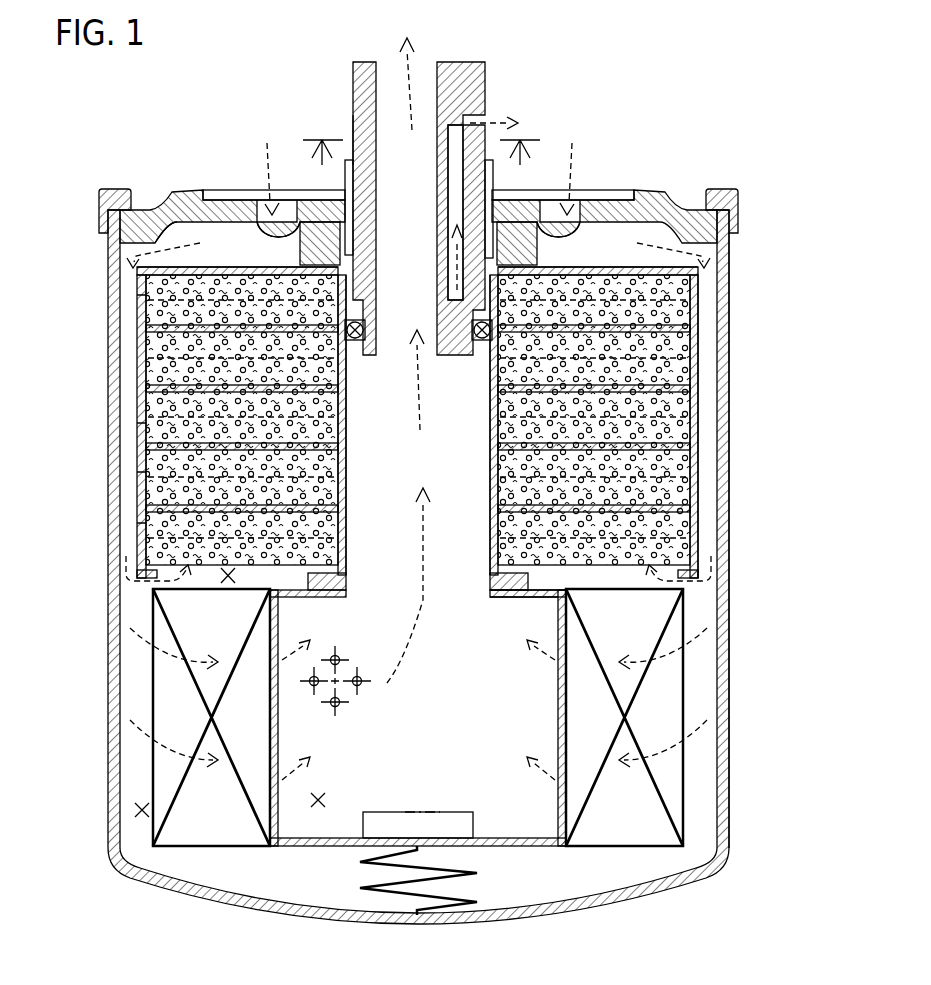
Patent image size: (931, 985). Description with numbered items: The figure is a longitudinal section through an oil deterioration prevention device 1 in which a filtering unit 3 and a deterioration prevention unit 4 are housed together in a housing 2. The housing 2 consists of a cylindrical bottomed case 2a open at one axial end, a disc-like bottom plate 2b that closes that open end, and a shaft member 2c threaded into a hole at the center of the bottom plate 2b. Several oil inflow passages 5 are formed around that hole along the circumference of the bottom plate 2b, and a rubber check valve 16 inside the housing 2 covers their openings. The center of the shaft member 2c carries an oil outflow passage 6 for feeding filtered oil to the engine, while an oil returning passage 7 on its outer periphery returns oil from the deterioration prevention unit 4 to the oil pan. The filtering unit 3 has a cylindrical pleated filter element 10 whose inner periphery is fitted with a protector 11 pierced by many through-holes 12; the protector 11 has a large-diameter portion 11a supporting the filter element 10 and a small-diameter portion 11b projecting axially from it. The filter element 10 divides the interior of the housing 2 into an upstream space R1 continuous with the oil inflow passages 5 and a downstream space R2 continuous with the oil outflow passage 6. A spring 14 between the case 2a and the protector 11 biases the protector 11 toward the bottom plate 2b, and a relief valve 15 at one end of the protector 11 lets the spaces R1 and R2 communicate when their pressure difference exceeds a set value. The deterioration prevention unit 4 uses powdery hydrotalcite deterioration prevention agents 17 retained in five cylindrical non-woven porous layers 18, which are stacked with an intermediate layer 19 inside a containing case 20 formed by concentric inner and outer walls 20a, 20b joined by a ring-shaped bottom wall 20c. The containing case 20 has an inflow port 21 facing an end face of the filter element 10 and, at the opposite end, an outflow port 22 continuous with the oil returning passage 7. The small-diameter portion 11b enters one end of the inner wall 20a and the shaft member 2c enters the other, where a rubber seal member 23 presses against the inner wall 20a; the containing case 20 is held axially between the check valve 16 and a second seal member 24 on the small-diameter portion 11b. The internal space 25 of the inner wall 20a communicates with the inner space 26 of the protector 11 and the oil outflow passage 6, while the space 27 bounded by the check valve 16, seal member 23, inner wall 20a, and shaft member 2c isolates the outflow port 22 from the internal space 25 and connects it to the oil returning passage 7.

The oil deterioration prevention device 1 is at (650, 97).
The housing 2 is at (741, 185).
The case 2a is at (729, 443).
The bottom plate 2b is at (619, 205).
The shaft member 2c is at (487, 78).
The filtering unit 3 is at (136, 687).
The deterioration prevention unit 4 is at (131, 383).
The oil inflow passage 5 is at (268, 214).
The oil outflow passage 6 is at (377, 293).
The oil returning passage 7 is at (458, 127).
The filter element 10 is at (167, 779).
The protector 11 is at (507, 713).
The large-diameter portion 11a is at (558, 680).
The small-diameter portion 11b is at (494, 580).
The through-hole 12 is at (288, 613).
The spring 14 is at (460, 877).
The relief valve 15 is at (478, 826).
The check valve 16 is at (236, 234).
The deterioration prevention agent 17 is at (157, 365).
The porous layer 18 is at (138, 293).
The intermediate layer 19 is at (318, 332).
The containing case 20 is at (700, 305).
The inner wall 20a is at (494, 407).
The outer wall 20b is at (699, 357).
The bottom wall 20c is at (613, 268).
The inflow port 21 is at (228, 580).
The outflow port 22 is at (363, 312).
The seal member 23 is at (298, 216).
The seal member 24 is at (495, 588).
The internal space 25 is at (396, 492).
The inner space 26 is at (470, 617).
The space 27 is at (370, 150).
The upstream space R1 is at (133, 808).
The downstream space R2 is at (318, 808).